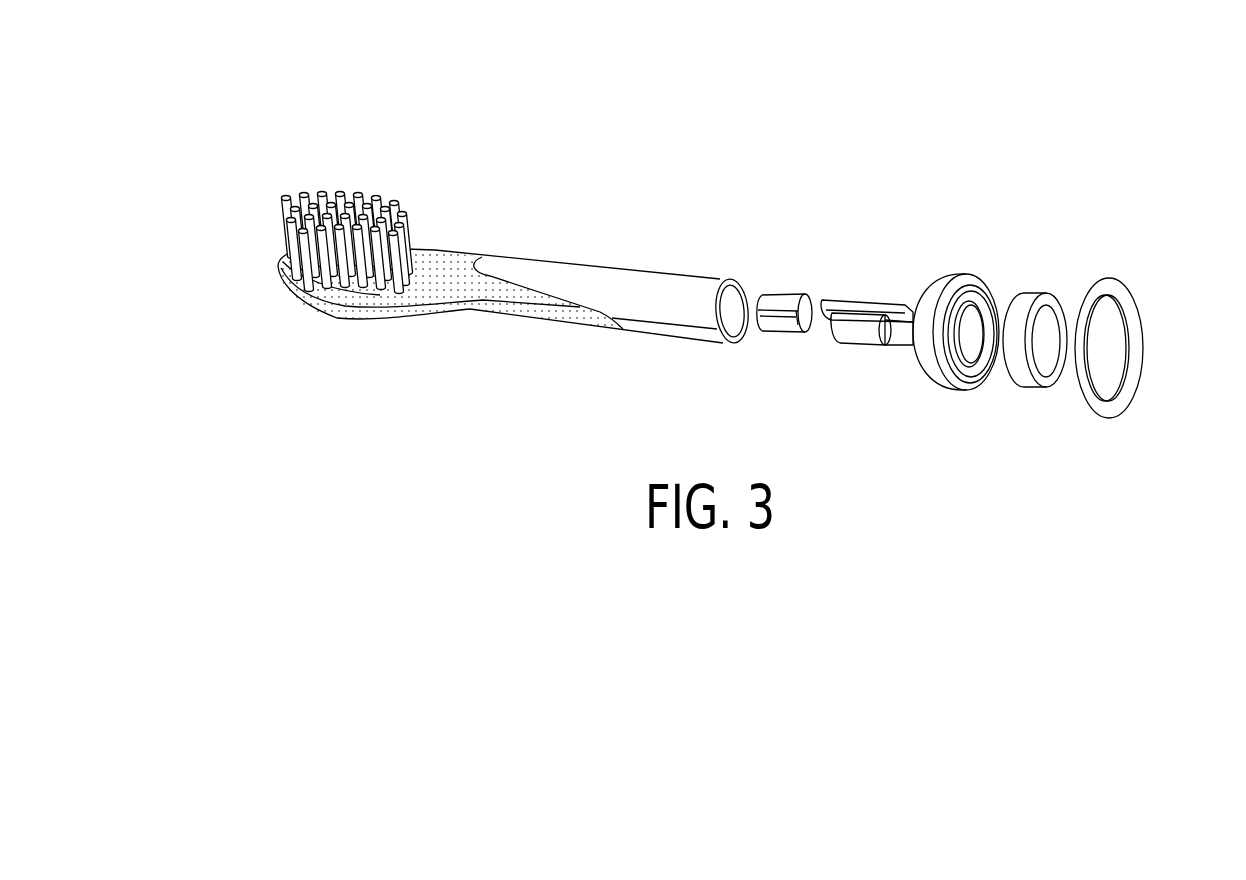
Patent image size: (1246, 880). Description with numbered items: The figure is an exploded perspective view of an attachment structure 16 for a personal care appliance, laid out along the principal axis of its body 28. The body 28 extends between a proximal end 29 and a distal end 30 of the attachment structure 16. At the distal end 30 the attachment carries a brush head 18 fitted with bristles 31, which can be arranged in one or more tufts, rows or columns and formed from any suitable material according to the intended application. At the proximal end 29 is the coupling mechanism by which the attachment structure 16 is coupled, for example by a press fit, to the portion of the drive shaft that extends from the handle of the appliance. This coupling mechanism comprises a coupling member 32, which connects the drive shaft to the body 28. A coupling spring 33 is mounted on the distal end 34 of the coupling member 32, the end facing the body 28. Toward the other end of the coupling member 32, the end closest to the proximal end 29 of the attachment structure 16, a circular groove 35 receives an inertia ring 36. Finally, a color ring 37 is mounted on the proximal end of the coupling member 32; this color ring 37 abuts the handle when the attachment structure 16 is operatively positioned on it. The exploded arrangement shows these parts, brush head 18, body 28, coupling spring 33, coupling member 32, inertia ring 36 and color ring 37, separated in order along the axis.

The attachment structure 16 is at (478, 105).
The brush head 18 is at (336, 318).
The body 28 is at (667, 272).
The proximal end 29 is at (1160, 327).
The distal end 30 is at (262, 224).
The bristles 31 is at (333, 192).
The coupling member 32 is at (915, 300).
The coupling spring 33 is at (790, 292).
The distal end of the coupling member 34 is at (855, 299).
The circular groove 35 is at (996, 290).
The inertia ring 36 is at (1041, 296).
The color ring 37 is at (1118, 281).